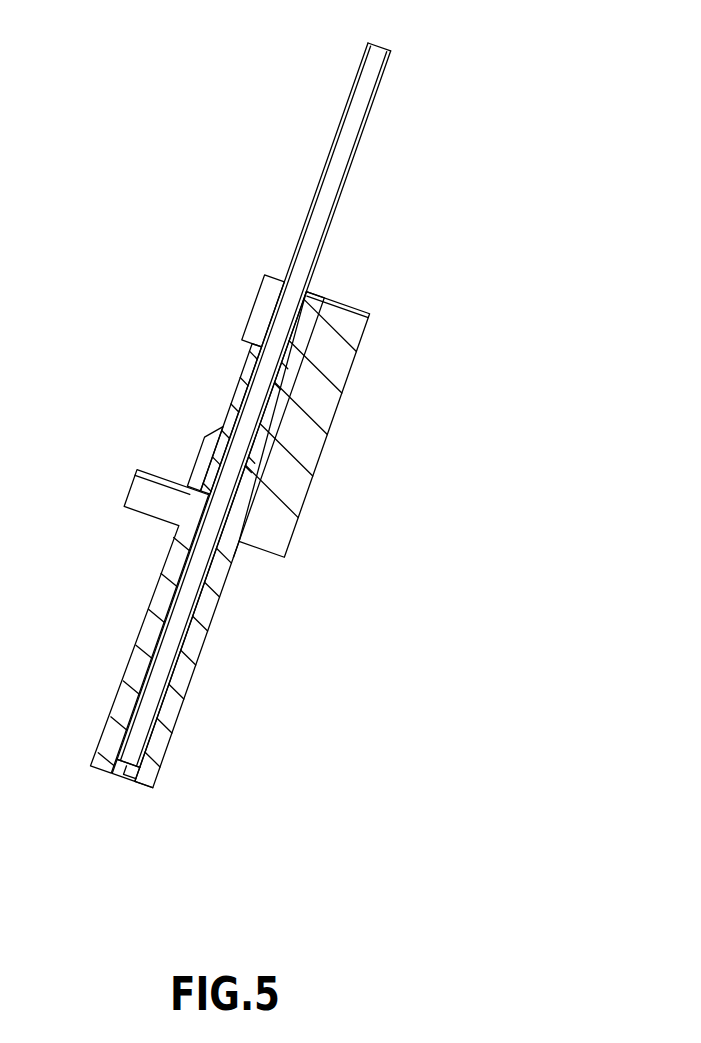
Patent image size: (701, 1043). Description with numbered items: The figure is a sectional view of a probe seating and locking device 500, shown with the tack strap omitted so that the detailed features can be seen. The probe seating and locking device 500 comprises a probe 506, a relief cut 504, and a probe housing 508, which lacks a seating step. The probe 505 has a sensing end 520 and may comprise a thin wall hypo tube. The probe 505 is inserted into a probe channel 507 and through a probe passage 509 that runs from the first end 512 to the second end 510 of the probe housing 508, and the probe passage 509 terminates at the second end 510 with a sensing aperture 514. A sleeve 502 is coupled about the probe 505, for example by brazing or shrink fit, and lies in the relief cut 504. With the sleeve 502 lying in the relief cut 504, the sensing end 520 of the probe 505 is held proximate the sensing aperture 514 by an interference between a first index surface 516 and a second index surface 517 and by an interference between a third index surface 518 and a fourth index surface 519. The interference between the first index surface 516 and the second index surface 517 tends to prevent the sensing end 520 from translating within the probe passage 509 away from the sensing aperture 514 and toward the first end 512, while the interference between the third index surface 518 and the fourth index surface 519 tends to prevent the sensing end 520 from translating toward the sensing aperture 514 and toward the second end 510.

The probe seating and locking device 500 is at (161, 99).
The sleeve 502 is at (236, 399).
The relief cut 504 is at (265, 419).
The probe 505 is at (316, 218).
The probe 506 is at (336, 205).
The probe channel 507 is at (216, 453).
The probe housing 508 is at (185, 668).
The probe passage 509 is at (186, 628).
The second end 510 is at (147, 773).
The first end 512 is at (224, 545).
The sensing aperture 514 is at (124, 772).
The first index surface 516 is at (283, 352).
The second index surface 517 is at (283, 359).
The third index surface 518 is at (258, 444).
The fourth index surface 519 is at (260, 446).
The sensing end 520 is at (132, 745).